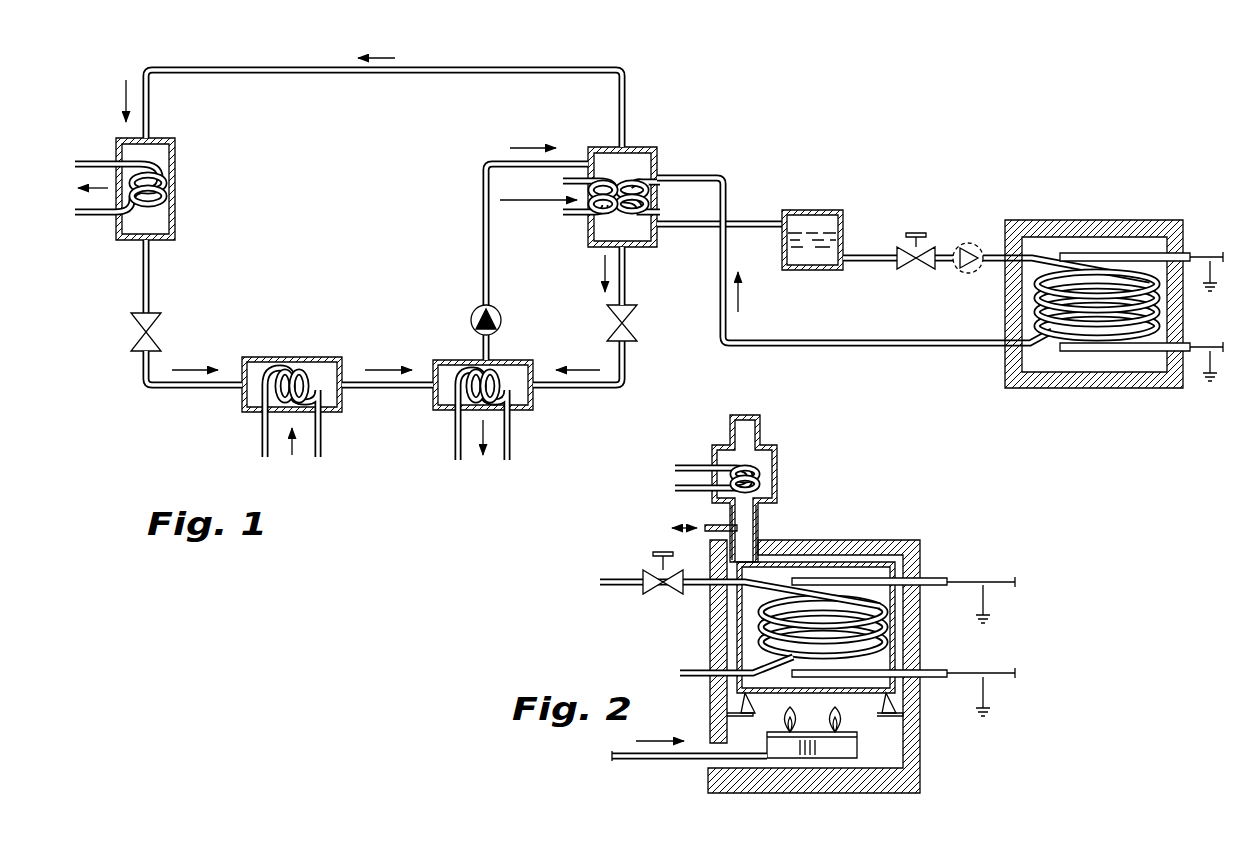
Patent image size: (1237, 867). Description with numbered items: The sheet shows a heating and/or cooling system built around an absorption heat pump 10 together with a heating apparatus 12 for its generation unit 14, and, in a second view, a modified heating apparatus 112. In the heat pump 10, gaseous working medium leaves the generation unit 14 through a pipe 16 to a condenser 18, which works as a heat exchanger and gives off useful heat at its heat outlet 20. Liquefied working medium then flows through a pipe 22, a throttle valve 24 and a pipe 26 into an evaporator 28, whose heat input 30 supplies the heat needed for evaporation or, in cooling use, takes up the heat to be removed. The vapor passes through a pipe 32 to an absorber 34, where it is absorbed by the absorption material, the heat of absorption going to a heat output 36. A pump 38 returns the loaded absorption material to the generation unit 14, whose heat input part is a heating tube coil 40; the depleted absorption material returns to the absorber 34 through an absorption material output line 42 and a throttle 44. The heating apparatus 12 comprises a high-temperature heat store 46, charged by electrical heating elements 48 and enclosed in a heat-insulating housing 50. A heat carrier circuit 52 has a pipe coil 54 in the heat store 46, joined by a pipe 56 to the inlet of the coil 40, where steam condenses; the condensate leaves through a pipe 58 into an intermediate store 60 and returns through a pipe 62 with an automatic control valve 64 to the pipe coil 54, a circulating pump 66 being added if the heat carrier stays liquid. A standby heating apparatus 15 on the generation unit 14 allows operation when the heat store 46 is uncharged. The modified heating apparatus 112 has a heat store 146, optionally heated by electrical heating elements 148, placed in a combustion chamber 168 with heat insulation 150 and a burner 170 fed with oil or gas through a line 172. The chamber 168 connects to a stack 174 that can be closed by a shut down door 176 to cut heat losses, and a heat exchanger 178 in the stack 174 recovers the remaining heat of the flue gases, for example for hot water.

In FIG. 1, the absorption heat pump 10 is at (376, 220).
In FIG. 1, the heating apparatus 12 is at (949, 135).
In FIG. 1, the generation unit 14 is at (592, 145).
In FIG. 1, the standby heating apparatus 15 is at (586, 226).
In FIG. 1, the pipe 16 is at (324, 74).
In FIG. 1, the condenser 18 is at (180, 199).
In FIG. 1, the heat outlet 20 is at (101, 216).
In FIG. 1, the pipe 22 is at (151, 276).
In FIG. 1, the throttle valve 24 is at (136, 343).
In FIG. 1, the pipe 26 is at (212, 392).
In FIG. 1, the evaporator 28 is at (282, 357).
In FIG. 1, the heat input 30 is at (268, 456).
In FIG. 1, the pipe 32 is at (416, 392).
In FIG. 1, the absorber 34 is at (541, 406).
In FIG. 1, the heat output 36 is at (460, 458).
In FIG. 1, the pump 38 is at (473, 324).
In FIG. 1, the heating tube coil 40 is at (638, 184).
In FIG. 1, the absorption material output line 42 is at (629, 275).
In FIG. 1, the throttle 44 is at (634, 326).
In FIG. 1, the high-temperature heat store 46 is at (1094, 272).
In FIG. 1, the electrical heating elements 48 is at (1190, 252).
In FIG. 1, the heat-insulating housing 50 is at (1120, 220).
In FIG. 1, the heat carrier circuit 52 is at (890, 326).
In FIG. 1, the pipe coil 54 is at (1036, 300).
In FIG. 1, the pipe 56 is at (795, 348).
In FIG. 1, the pipe 58 is at (746, 221).
In FIG. 1, the intermediate store 60 is at (815, 210).
In FIG. 1, the pipe 62 is at (867, 255).
In FIG. 1, the control valve 64 is at (912, 245).
In FIG. 1, the circulating pump 66 is at (968, 242).
In FIG. 2, the heating apparatus 112 is at (844, 635).
In FIG. 2, the heat store 146 is at (836, 577).
In FIG. 2, the electrical heating elements 148 is at (950, 580).
In FIG. 2, the heat insulation 150 is at (912, 545).
In FIG. 2, the combustion chamber 168 is at (903, 641).
In FIG. 2, the burner 170 is at (857, 745).
In FIG. 2, the line 172 is at (672, 760).
In FIG. 2, the stack 174 is at (760, 526).
In FIG. 2, the shut down door 176 is at (712, 522).
In FIG. 2, the heat exchanger 178 is at (724, 447).